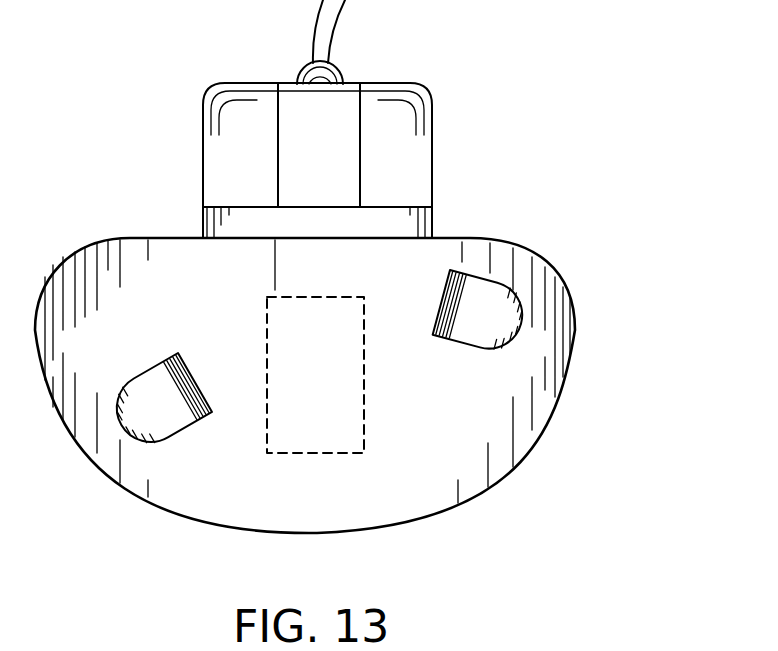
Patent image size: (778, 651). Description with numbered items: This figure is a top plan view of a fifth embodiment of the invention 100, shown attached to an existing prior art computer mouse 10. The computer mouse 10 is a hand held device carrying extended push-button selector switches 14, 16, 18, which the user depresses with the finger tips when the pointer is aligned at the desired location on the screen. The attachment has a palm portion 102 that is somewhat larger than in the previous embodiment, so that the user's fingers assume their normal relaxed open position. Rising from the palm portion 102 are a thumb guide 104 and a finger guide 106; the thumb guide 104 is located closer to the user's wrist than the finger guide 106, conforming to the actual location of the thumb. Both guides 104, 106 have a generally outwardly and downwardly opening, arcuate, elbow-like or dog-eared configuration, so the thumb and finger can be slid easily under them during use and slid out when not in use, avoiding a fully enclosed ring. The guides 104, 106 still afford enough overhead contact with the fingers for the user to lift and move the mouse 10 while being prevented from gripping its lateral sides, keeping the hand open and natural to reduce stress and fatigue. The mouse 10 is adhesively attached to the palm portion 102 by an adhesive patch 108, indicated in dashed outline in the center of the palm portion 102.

The fifth embodiment of the invention 100 is at (367, 296).
The palm portion 102 is at (462, 417).
The thumb guide 104 is at (150, 442).
The finger guide 106 is at (519, 325).
The adhesive patch 108 is at (292, 453).
The computer mouse 10 is at (369, 119).
The push-button selector switch 14 is at (221, 168).
The push-button selector switch 16 is at (299, 168).
The push-button selector switch 18 is at (378, 168).